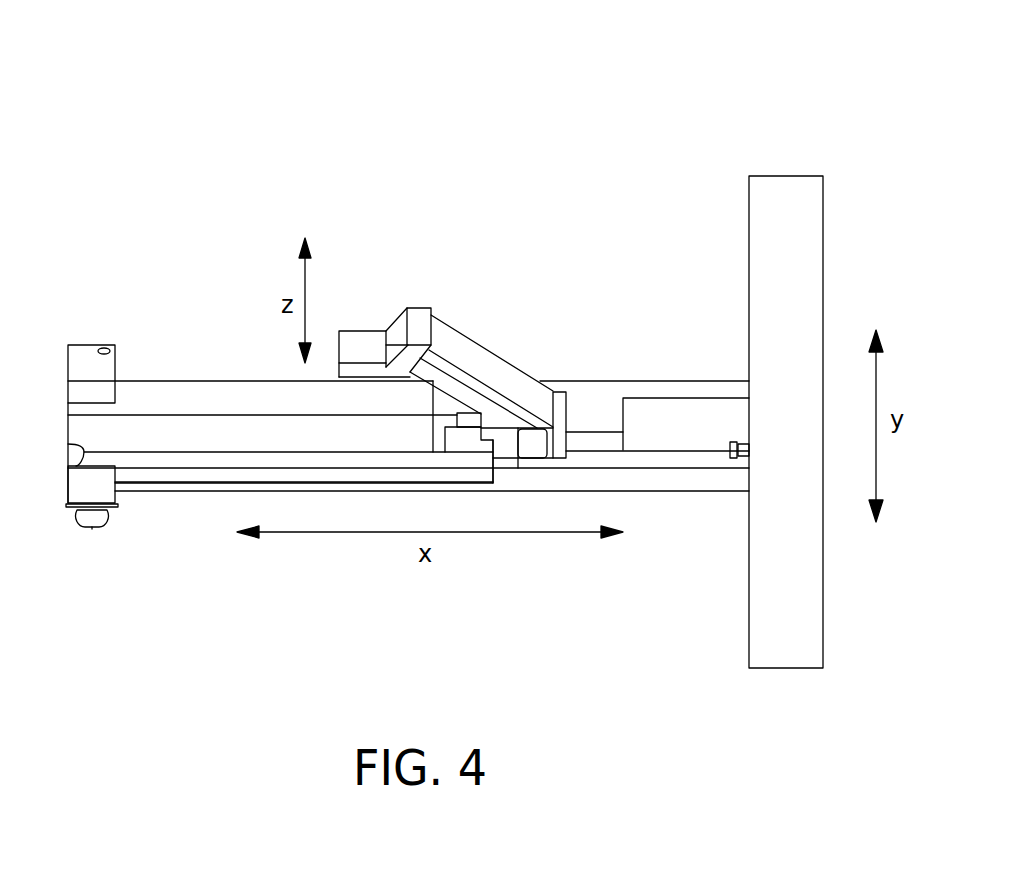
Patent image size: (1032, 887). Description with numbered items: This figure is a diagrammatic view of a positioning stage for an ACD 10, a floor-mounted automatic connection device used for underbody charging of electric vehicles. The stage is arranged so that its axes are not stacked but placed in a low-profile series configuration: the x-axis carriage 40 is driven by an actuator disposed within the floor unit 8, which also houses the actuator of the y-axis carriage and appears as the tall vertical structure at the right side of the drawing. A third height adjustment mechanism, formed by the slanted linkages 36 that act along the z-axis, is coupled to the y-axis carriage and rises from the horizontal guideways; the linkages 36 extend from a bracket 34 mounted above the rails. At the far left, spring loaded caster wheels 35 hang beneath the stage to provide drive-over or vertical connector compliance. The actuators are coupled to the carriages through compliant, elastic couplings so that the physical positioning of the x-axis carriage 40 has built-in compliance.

The floor unit 8 is at (802, 260).
The ACD 10 is at (233, 122).
The bracket 34 is at (362, 330).
The spring loaded caster wheels 35 is at (92, 529).
The linkages 36 is at (497, 357).
The x-axis carriage 40 is at (608, 380).